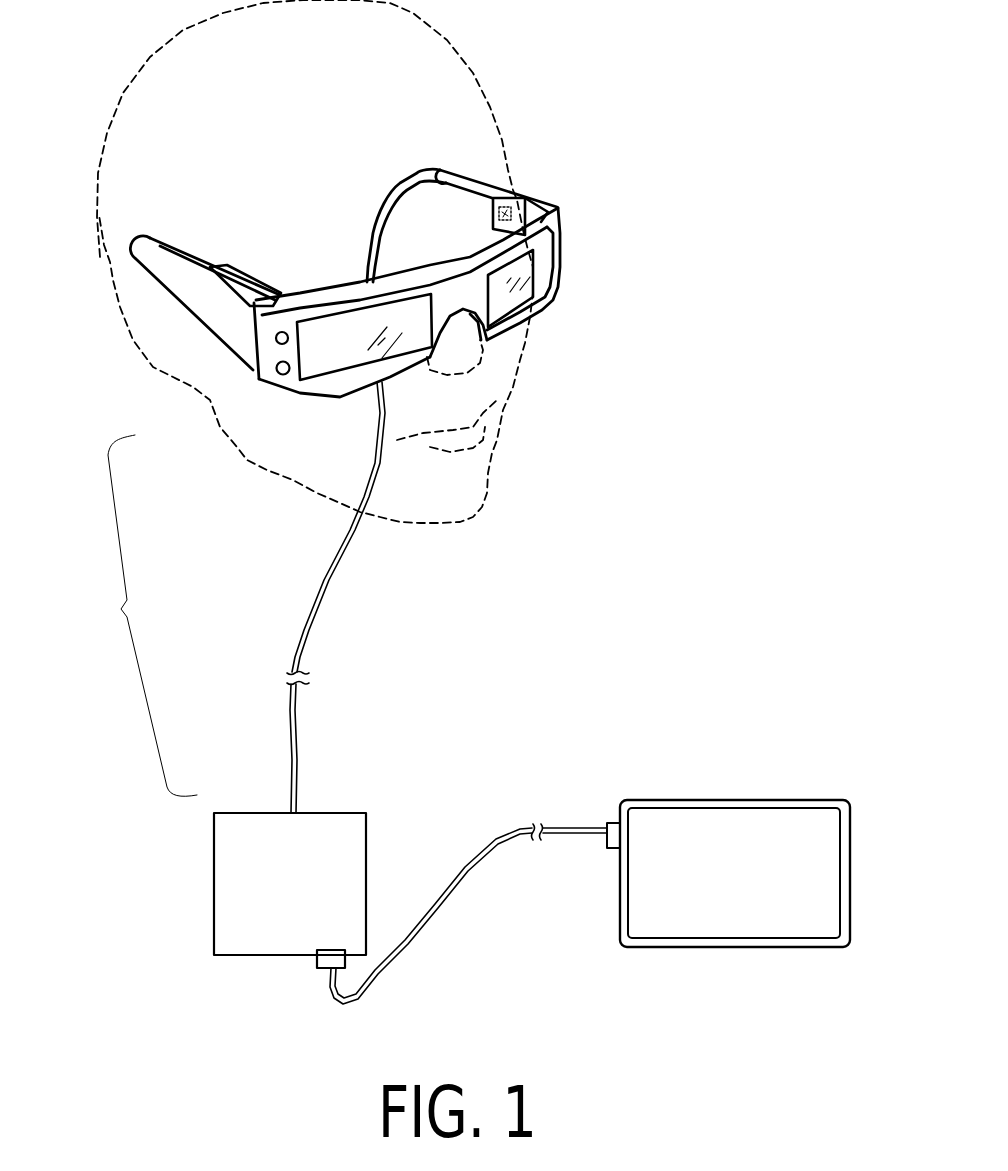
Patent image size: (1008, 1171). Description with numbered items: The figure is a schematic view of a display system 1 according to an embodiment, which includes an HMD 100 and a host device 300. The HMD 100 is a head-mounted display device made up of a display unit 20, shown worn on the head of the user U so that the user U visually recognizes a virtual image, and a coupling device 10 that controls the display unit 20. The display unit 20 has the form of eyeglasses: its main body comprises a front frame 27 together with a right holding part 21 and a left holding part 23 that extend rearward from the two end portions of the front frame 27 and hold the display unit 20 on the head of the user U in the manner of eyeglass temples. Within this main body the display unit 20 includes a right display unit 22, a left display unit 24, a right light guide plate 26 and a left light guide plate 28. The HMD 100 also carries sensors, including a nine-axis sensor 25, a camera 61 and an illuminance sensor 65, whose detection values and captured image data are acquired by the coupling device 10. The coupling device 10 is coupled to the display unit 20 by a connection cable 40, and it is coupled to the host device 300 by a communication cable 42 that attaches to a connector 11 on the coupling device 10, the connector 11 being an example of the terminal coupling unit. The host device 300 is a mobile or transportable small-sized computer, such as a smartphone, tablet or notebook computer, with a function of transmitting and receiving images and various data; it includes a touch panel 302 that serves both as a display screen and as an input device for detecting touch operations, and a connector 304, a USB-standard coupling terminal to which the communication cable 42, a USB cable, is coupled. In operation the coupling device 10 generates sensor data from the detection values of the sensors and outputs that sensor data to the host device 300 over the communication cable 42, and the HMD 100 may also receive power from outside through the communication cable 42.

The display system 1 is at (732, 470).
The user U is at (516, 79).
The HMD 100 is at (136, 615).
The display unit 20 is at (176, 409).
The right holding part 21 is at (149, 231).
The right display unit 22 is at (243, 280).
The left holding part 23 is at (489, 176).
The left display unit 24 is at (507, 197).
The 9-axis sensor 25 is at (492, 220).
The right light guide plate 26 is at (343, 370).
The front frame 27 is at (560, 212).
The left light guide plate 28 is at (543, 290).
The camera 61 is at (283, 376).
The illuminance sensor 65 is at (283, 331).
The connection cable 40 is at (297, 721).
The coupling device 10 is at (227, 822).
The connector 11 is at (322, 962).
The communication cable 42 is at (448, 899).
The host device 300 is at (668, 800).
The touch panel 302 is at (650, 927).
The connector 304 is at (607, 825).